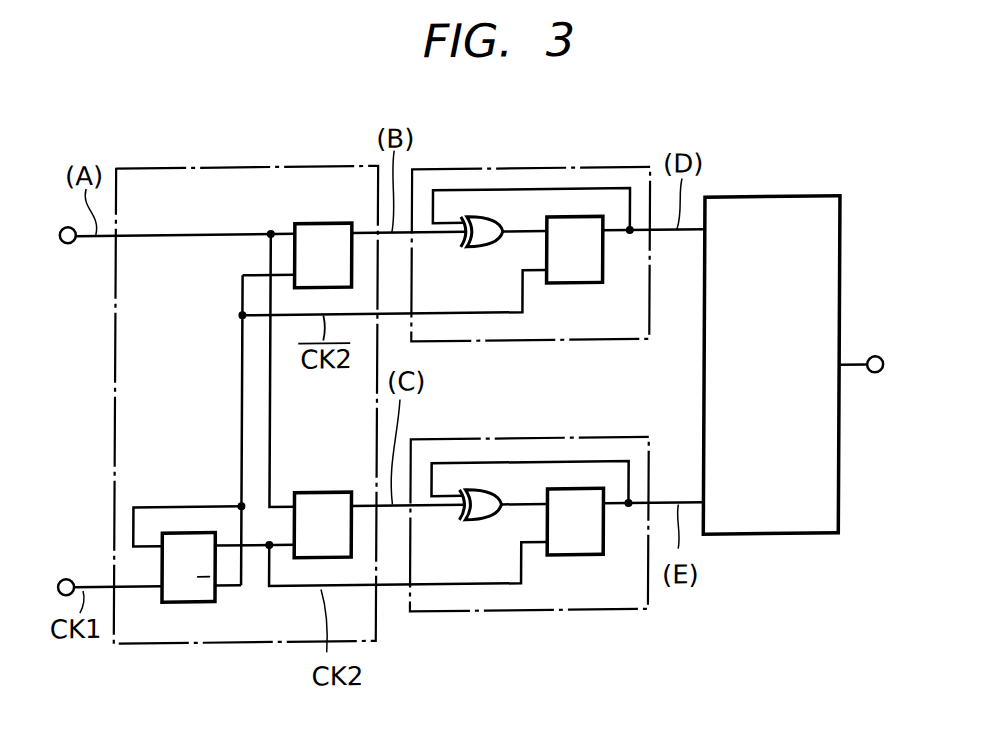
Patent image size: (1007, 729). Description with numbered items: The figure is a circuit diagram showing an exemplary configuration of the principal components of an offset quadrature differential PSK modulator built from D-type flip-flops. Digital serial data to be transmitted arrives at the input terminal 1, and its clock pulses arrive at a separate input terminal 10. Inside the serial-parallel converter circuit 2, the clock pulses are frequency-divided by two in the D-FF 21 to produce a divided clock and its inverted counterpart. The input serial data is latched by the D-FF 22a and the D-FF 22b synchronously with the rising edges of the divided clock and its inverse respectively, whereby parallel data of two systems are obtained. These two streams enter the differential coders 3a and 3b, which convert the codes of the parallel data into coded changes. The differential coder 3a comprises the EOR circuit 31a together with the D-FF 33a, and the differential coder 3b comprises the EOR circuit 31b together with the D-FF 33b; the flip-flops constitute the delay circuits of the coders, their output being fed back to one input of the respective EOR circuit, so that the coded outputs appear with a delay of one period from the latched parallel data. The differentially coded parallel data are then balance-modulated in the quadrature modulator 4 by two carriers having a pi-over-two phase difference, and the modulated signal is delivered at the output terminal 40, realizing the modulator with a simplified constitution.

The input terminal 1 is at (62, 230).
The serial-parallel converter circuit 2 is at (216, 170).
The differential coder 3a is at (498, 173).
The differential coder 3b is at (521, 621).
The quadrature modulator 4 is at (764, 205).
The input terminal 10 is at (62, 582).
The D-type flip-flop 21 is at (193, 535).
The D-type flip-flop 22a is at (319, 227).
The D-type flip-flop 22b is at (323, 496).
The EOR circuit 31a is at (471, 252).
The EOR circuit 31b is at (469, 525).
The D-type flip-flop 33a is at (569, 289).
The D-type flip-flop 33b is at (574, 561).
The output terminal 40 is at (876, 365).